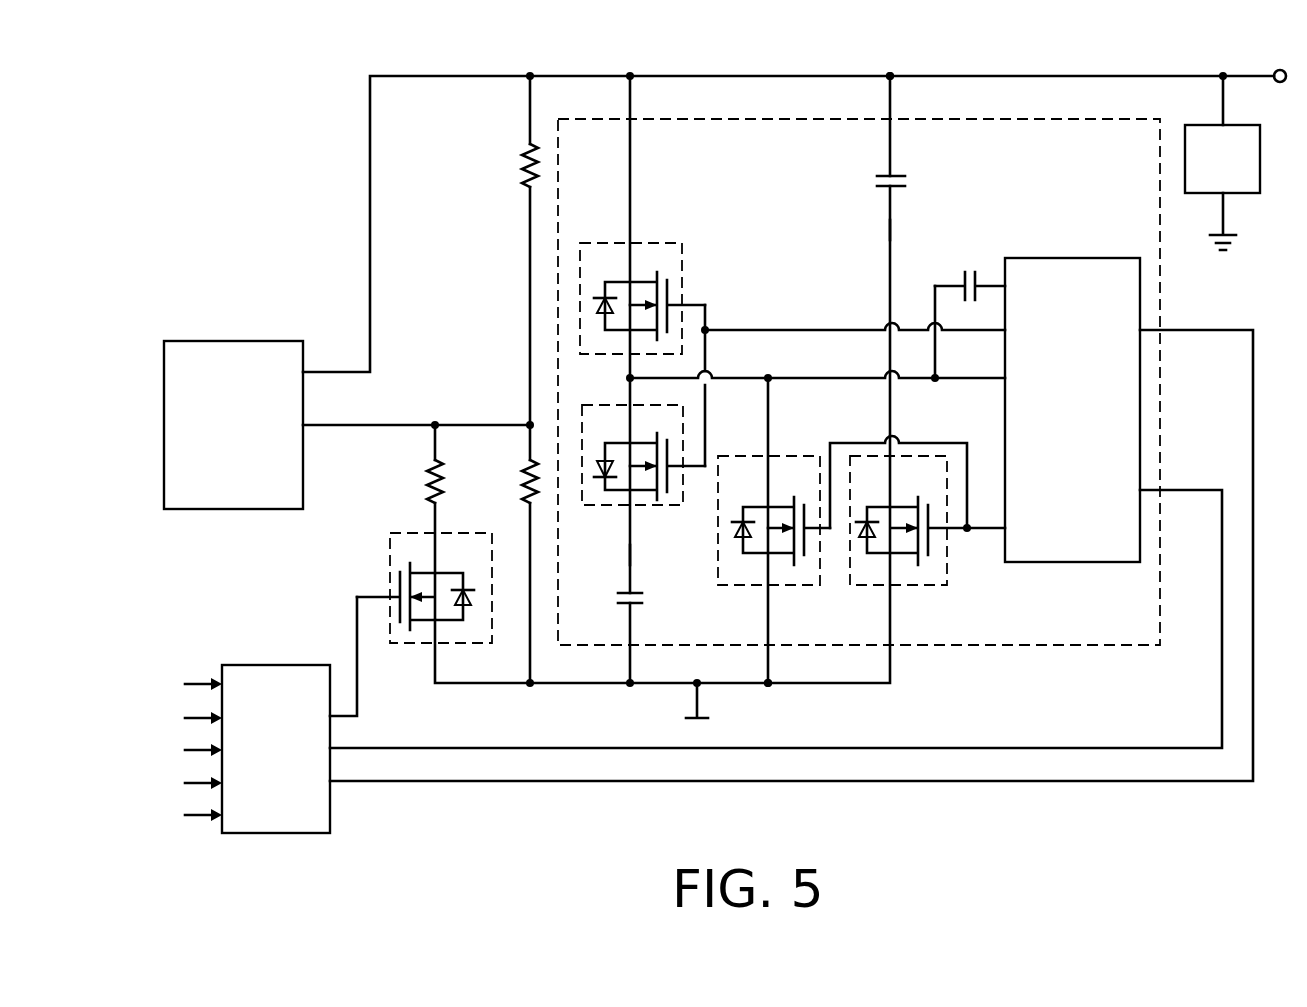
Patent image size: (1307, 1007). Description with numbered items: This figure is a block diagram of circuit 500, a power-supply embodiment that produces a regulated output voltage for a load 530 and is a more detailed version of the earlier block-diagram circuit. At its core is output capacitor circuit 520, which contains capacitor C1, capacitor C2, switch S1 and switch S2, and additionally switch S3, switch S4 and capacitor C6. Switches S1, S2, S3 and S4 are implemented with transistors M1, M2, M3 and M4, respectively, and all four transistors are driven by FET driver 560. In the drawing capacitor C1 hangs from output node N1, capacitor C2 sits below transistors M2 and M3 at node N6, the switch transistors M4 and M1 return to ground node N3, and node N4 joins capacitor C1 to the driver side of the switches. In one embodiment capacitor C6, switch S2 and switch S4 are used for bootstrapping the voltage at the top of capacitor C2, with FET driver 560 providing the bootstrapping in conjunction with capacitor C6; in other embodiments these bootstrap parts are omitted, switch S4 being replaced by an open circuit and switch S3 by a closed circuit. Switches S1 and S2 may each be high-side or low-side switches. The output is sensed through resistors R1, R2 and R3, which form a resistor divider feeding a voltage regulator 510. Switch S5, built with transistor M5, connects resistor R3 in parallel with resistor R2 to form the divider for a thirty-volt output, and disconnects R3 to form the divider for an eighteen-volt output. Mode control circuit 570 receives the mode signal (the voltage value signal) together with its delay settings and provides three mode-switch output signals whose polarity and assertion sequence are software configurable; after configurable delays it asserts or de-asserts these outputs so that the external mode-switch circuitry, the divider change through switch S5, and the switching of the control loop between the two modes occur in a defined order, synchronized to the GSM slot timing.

The circuit 500 is at (991, 34).
The voltage regulator 510 is at (249, 471).
The output capacitor circuit 520 is at (750, 159).
The load 530 is at (1238, 189).
The FET driver 560 is at (1088, 448).
The mode control circuit 570 is at (260, 813).
The transistor M1 is at (911, 520).
The transistor M2 is at (649, 295).
The transistor M3 is at (649, 455).
The transistor M4 is at (781, 520).
The transistor M5 is at (417, 586).
The switch S1 is at (950, 590).
The switch S2 is at (684, 250).
The switch S3 is at (612, 507).
The switch S4 is at (797, 588).
The switch S5 is at (457, 645).
The resistor R1 is at (513, 165).
The resistor R2 is at (513, 481).
The resistor R3 is at (419, 481).
The capacitor C1 is at (908, 186).
The capacitor C2 is at (650, 604).
The capacitor C6 is at (970, 274).
The node N1 is at (890, 76).
The node N3 is at (770, 686).
The node N4 is at (890, 232).
The node N6 is at (630, 553).